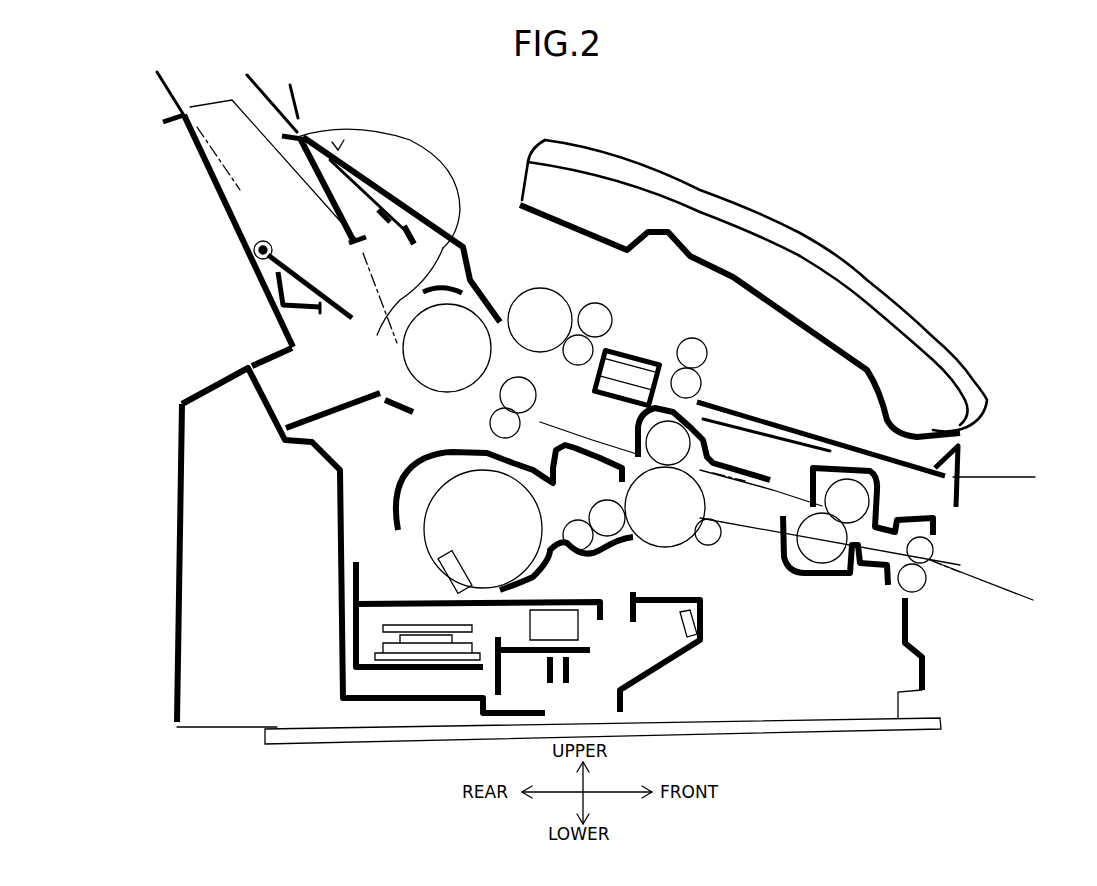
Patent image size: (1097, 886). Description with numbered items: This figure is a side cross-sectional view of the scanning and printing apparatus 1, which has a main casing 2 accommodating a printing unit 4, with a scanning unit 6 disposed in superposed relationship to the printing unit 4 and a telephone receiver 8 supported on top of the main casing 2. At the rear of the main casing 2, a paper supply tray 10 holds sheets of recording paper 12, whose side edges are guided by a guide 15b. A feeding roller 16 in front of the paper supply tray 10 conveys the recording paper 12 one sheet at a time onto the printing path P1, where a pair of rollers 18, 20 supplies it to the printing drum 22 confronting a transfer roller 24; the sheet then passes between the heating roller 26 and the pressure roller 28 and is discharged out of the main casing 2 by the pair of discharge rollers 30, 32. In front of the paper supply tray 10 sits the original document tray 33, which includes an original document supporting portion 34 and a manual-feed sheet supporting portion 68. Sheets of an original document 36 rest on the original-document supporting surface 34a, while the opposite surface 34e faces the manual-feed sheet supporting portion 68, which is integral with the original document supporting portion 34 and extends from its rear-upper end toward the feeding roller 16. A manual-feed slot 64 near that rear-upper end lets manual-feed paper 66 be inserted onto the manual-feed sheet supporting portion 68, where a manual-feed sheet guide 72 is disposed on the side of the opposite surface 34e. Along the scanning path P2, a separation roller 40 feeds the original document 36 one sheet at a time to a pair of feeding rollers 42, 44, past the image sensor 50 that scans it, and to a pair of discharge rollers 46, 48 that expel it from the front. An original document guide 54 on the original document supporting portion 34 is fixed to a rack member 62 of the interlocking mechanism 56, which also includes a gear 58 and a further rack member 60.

The scanning and printing apparatus 1 is at (990, 390).
The main casing 2 is at (176, 558).
The printing unit 4 is at (717, 577).
The scanning unit 6 is at (735, 356).
The telephone receiver 8 is at (715, 212).
The paper supply tray 10 is at (245, 225).
The recording paper 12 is at (168, 92).
The guide 15b is at (215, 110).
The feeding roller 16 is at (448, 322).
The roller 18 is at (500, 398).
The roller 20 is at (492, 422).
The printing drum 22 is at (740, 583).
The transfer roller 24 is at (475, 452).
The heating roller 26 is at (828, 545).
The pressure roller 28 is at (863, 502).
The discharge roller 30 is at (907, 580).
The discharge roller 32 is at (922, 552).
The original document tray 33 is at (336, 142).
The original document supporting portion 34 is at (360, 150).
The original-document supporting surface 34a is at (410, 185).
The opposite surface 34e is at (400, 262).
The original document 36 is at (452, 130).
The separation roller 40 is at (548, 320).
The feeding roller 42 is at (596, 320).
The feeding roller 44 is at (627, 373).
The discharge roller 46 is at (688, 380).
The discharge roller 48 is at (668, 443).
The image sensor 50 is at (700, 352).
The right-side original document guide 54 is at (377, 235).
The interlocking mechanism 56 is at (350, 247).
The gear 58 is at (330, 213).
The rack member 60 is at (363, 170).
The rack member 62 is at (280, 293).
The manual-feed slot 64 is at (308, 137).
The manual-feed paper 66 is at (200, 134).
The manual-feed sheet supporting portion 68 is at (433, 140).
The manual-feed sheet guide 72 is at (338, 158).
The printing path P1 is at (827, 437).
The scanning path P2 is at (760, 370).